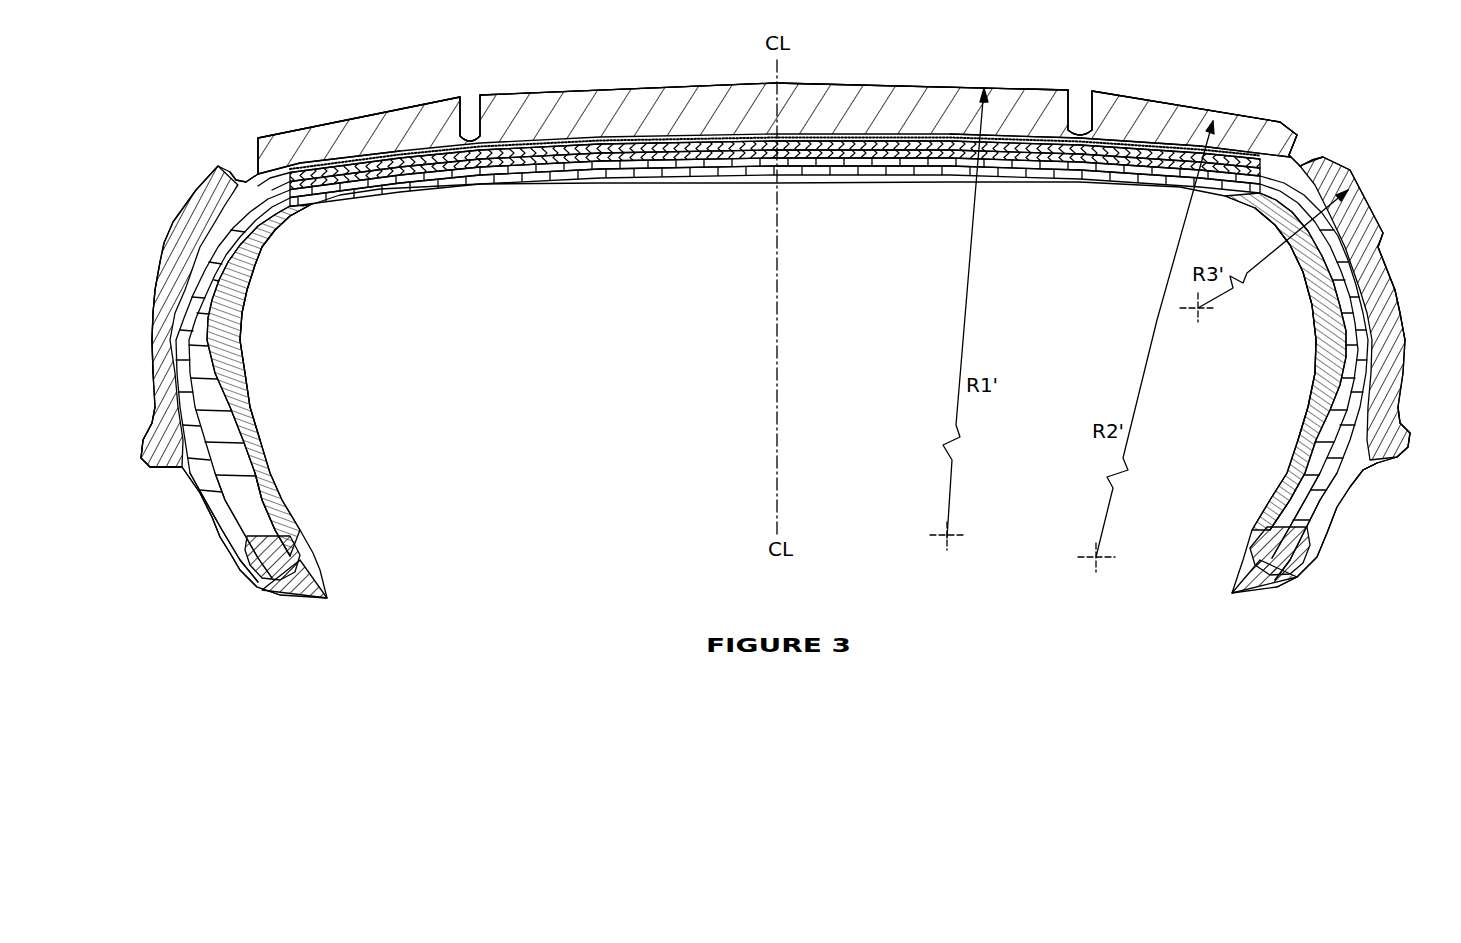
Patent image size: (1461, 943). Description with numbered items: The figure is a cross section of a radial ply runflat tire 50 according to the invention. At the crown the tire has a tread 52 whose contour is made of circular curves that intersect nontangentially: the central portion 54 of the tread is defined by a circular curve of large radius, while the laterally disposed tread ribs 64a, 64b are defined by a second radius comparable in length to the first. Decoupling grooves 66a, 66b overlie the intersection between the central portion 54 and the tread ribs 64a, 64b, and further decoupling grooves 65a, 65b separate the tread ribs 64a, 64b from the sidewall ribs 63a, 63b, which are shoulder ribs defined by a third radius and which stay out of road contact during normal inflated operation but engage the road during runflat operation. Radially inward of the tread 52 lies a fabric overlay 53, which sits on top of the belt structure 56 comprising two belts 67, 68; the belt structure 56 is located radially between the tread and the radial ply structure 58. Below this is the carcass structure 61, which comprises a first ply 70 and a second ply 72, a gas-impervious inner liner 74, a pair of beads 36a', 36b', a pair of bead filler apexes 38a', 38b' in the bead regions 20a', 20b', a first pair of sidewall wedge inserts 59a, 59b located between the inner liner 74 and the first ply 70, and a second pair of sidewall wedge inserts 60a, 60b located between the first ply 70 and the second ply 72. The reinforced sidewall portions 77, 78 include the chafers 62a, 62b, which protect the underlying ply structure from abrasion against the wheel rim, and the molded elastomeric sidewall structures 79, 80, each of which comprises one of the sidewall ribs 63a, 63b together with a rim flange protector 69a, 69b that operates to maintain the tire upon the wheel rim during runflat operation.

The runflat tire 50 is at (300, 103).
The tread 52 is at (600, 85).
The central portion of the tread 54 is at (680, 100).
The belt structure 56 is at (800, 140).
The belt 68 is at (840, 148).
The fabric overlay 53 is at (905, 135).
The radial ply structure 58 is at (624, 172).
The carcass structure 61 is at (678, 180).
The belt 67 is at (955, 138).
The decoupling groove 66a is at (468, 100).
The decoupling groove 66b is at (1082, 105).
The tread rib 64a is at (362, 120).
The tread rib 64b is at (1233, 124).
The decoupling groove 65a is at (243, 175).
The decoupling groove 65b is at (1307, 160).
The sidewall rib 63a is at (198, 192).
The sidewall rib 63b is at (1350, 192).
The inner liner 74 is at (322, 196).
The first ply 70 is at (282, 242).
The second ply 72 is at (235, 290).
The sidewall portion 77 is at (166, 305).
The molded elastomeric sidewall structure 79 is at (167, 315).
The first sidewall wedge insert 59a is at (224, 363).
The first sidewall wedge insert 59b is at (1330, 325).
The second sidewall wedge insert 60a is at (244, 330).
The second sidewall wedge insert 60b is at (1332, 365).
The bead filler apex 38a' is at (260, 497).
The bead filler apex 38b' is at (1266, 506).
The bead region 20a' is at (275, 514).
The bead region 20b' is at (1253, 515).
The bead 36a' is at (304, 553).
The bead 36b' is at (1245, 560).
The rim flange protector 69a is at (148, 455).
The rim flange protector 69b is at (1395, 440).
The chafer 62a is at (207, 495).
The chafer 62b is at (1350, 480).
The sidewall portion 78 is at (1397, 258).
The molded elastomeric sidewall structure 80 is at (1407, 320).